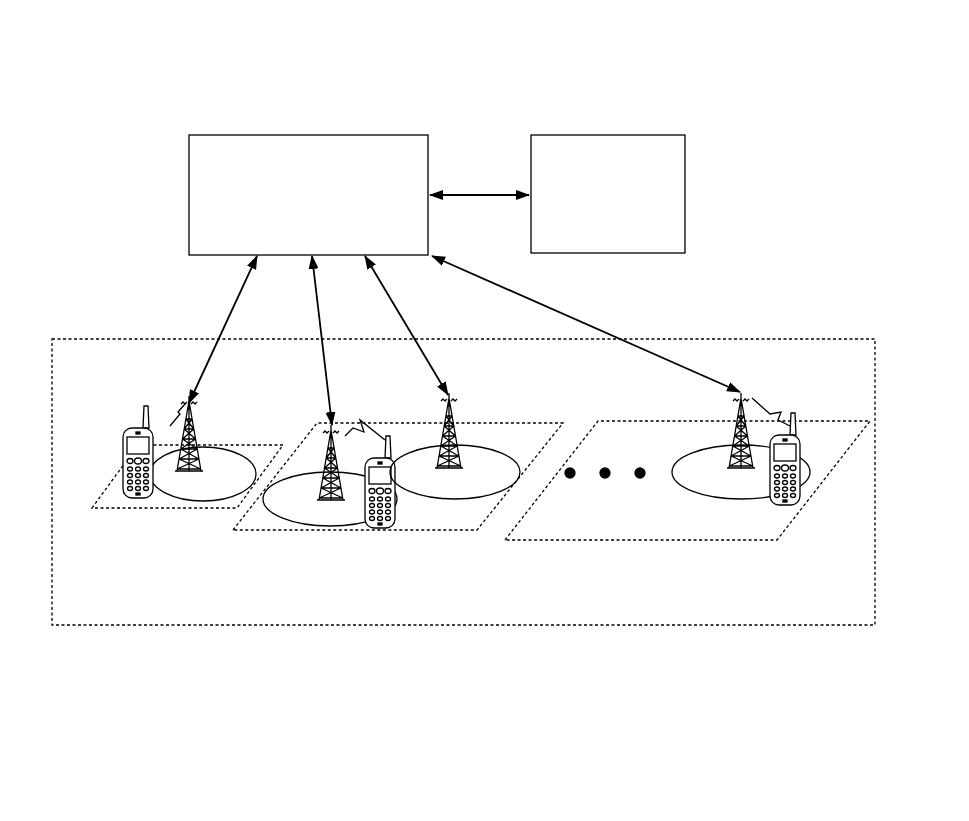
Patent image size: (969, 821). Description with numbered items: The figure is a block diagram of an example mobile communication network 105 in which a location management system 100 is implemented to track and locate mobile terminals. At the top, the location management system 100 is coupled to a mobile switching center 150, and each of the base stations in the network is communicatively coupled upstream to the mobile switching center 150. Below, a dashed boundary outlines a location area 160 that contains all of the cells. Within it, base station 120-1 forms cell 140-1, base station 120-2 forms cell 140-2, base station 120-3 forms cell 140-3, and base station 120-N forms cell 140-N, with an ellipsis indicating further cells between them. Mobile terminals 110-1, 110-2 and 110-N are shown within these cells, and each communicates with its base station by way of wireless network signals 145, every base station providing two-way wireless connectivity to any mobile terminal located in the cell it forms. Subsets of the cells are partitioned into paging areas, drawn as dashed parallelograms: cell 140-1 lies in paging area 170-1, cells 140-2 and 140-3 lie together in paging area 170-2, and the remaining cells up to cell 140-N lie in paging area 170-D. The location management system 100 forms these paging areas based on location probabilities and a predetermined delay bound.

The mobile communication network 105 is at (163, 25).
The location management system 100 is at (608, 194).
The mobile switching center 150 is at (308, 195).
The location area 160 is at (772, 338).
The mobile terminal 110-1 is at (124, 435).
The mobile terminal 110-2 is at (393, 522).
The mobile terminal 110-N is at (800, 497).
The base station 120-1 is at (193, 424).
The base station 120-2 is at (326, 445).
The base station 120-3 is at (462, 422).
The base station 120-N is at (735, 442).
The cell 140-1 is at (172, 500).
The cell 140-2 is at (326, 526).
The cell 140-3 is at (468, 500).
The cell 140-N is at (700, 497).
The wireless network signals 145 is at (170, 412).
The paging area 170-1 is at (110, 510).
The paging area 170-2 is at (522, 423).
The paging area 170-D is at (618, 421).